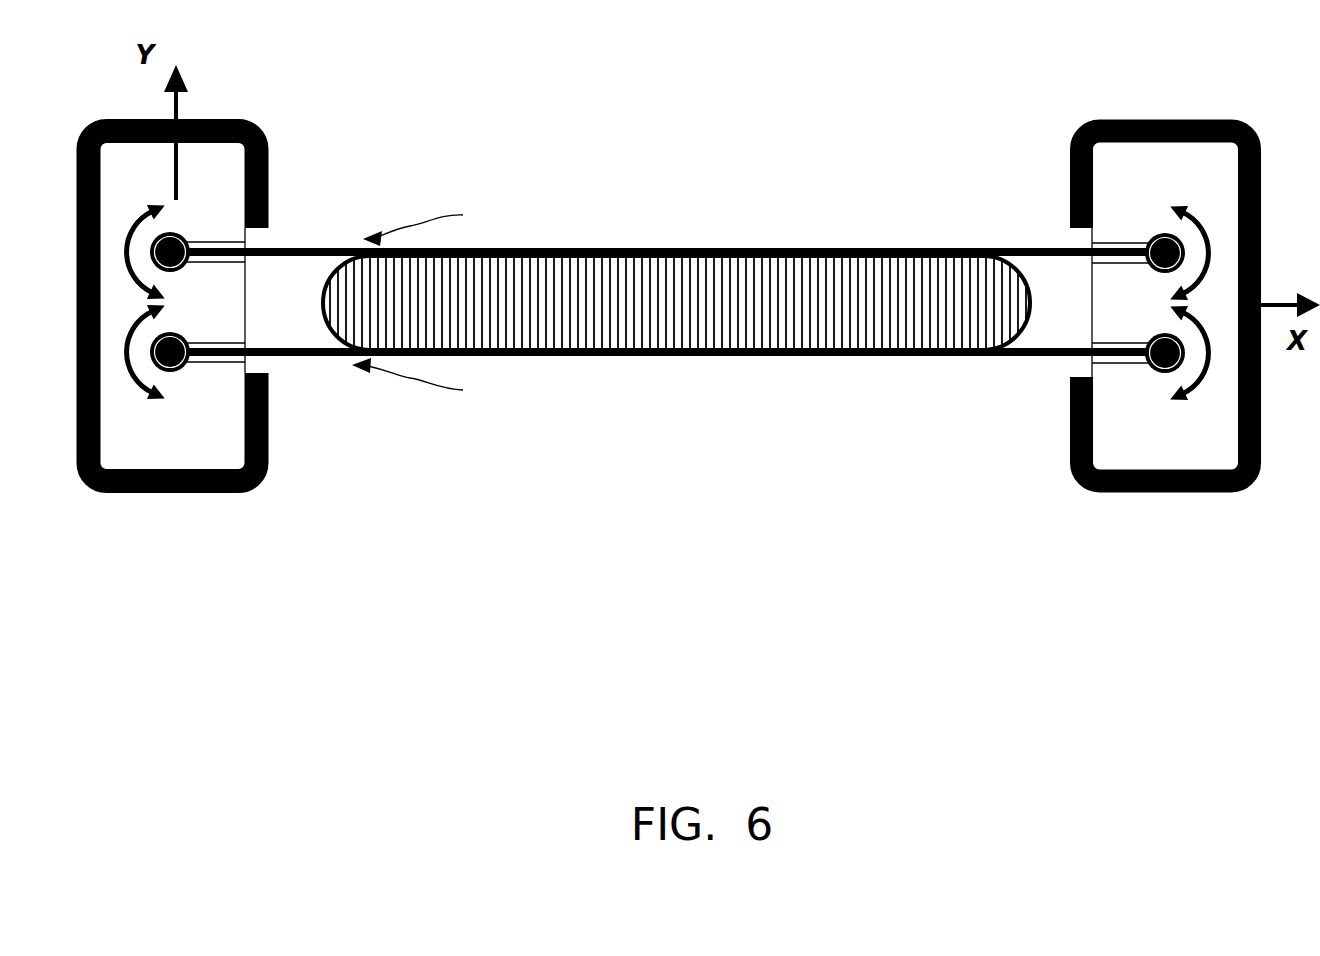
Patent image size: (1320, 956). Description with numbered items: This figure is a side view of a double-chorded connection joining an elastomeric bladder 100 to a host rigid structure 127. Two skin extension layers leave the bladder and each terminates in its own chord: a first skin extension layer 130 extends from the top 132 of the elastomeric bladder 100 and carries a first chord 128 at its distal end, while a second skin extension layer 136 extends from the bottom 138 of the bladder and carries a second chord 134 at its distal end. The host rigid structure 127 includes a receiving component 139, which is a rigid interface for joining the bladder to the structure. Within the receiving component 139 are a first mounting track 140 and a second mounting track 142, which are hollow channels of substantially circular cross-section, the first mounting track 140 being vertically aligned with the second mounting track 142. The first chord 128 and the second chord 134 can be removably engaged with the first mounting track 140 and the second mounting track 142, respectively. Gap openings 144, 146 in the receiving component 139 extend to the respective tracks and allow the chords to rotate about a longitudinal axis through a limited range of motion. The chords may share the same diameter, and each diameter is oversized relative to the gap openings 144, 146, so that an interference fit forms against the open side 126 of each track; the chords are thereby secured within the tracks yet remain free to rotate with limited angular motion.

The elastomeric bladder 100 is at (760, 180).
The open side 126 is at (186, 264).
The host rigid structure 127 is at (172, 497).
The first chord 128 is at (232, 246).
The first skin extension layer 130 is at (323, 250).
The top 132 is at (676, 250).
The second chord 134 is at (235, 358).
The second skin extension layer 136 is at (323, 362).
The bottom 138 is at (668, 355).
The receiving component 139 is at (147, 184).
The first mounting track 140 is at (175, 233).
The second mounting track 142 is at (168, 373).
The gap opening 144 is at (445, 224).
The gap opening 146 is at (438, 381).